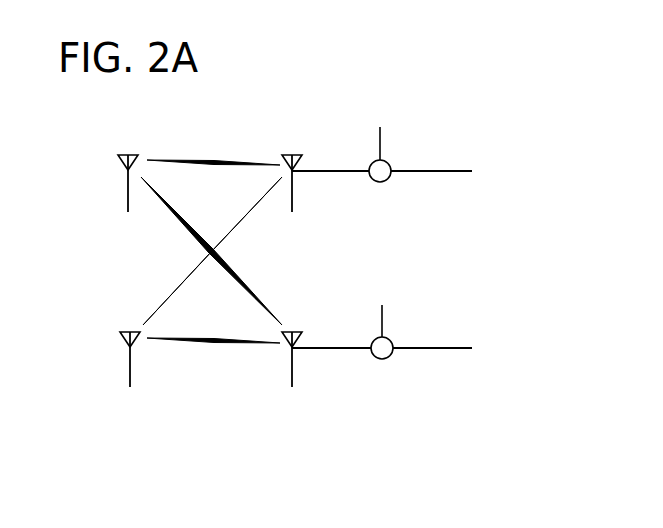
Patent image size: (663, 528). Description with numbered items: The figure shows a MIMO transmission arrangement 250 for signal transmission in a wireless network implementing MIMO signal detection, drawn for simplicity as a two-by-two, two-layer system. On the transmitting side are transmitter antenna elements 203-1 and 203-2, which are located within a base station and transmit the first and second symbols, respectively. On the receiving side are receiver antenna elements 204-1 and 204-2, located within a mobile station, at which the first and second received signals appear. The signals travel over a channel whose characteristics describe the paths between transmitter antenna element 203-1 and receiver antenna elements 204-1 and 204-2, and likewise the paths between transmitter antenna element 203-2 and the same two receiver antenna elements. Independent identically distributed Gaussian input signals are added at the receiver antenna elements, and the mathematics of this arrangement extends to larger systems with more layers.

The transmitter antenna element 203-1 is at (128, 155).
The receiver antenna element 204-1 is at (295, 155).
The transmitter antenna element 203-2 is at (132, 363).
The receiver antenna element 204-2 is at (292, 363).
The MIMO transmission arrangement 250 is at (463, 84).